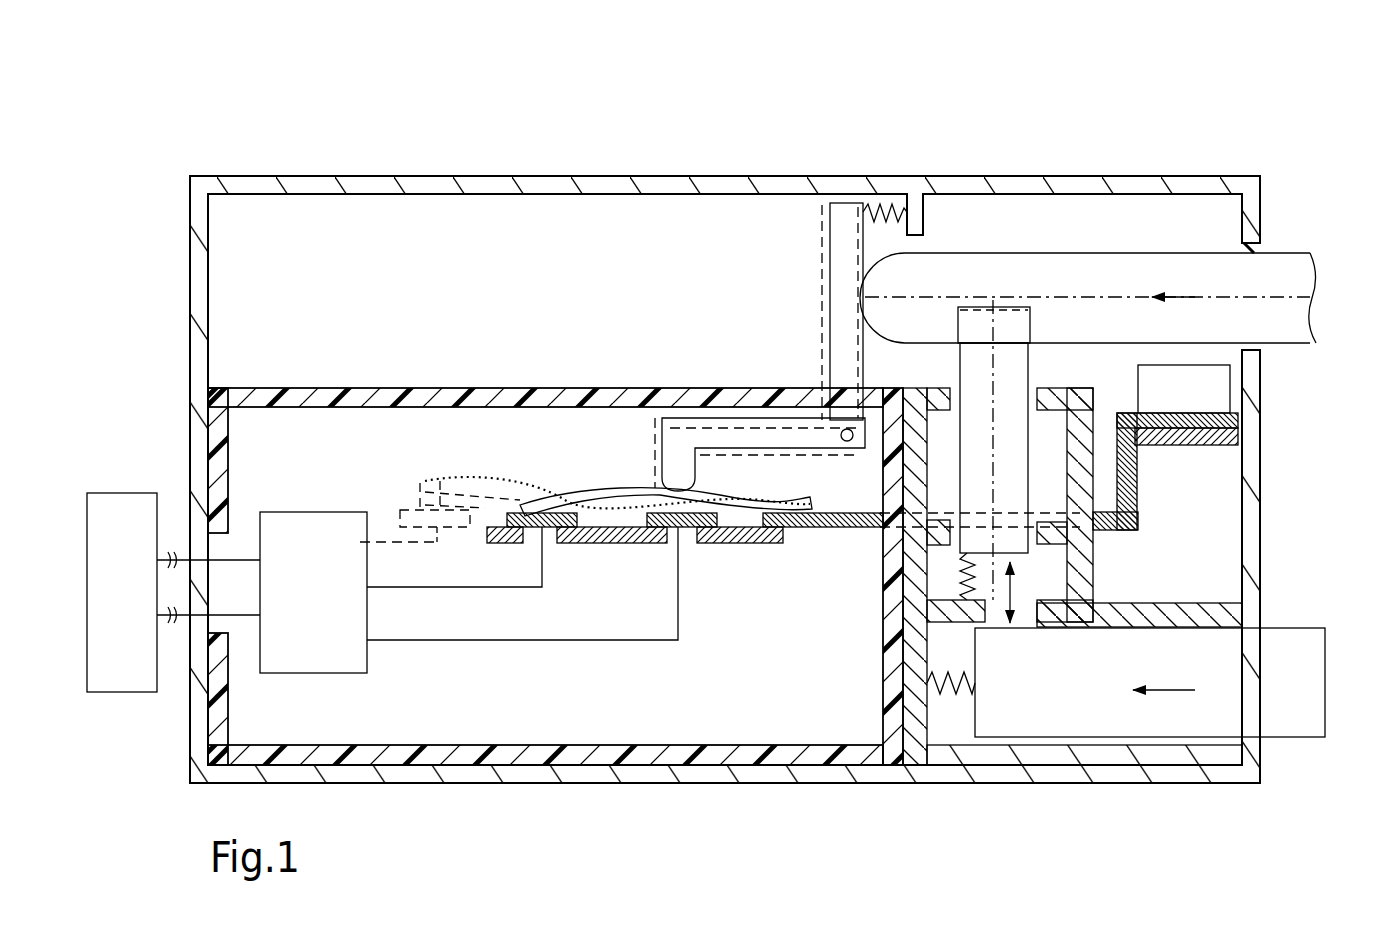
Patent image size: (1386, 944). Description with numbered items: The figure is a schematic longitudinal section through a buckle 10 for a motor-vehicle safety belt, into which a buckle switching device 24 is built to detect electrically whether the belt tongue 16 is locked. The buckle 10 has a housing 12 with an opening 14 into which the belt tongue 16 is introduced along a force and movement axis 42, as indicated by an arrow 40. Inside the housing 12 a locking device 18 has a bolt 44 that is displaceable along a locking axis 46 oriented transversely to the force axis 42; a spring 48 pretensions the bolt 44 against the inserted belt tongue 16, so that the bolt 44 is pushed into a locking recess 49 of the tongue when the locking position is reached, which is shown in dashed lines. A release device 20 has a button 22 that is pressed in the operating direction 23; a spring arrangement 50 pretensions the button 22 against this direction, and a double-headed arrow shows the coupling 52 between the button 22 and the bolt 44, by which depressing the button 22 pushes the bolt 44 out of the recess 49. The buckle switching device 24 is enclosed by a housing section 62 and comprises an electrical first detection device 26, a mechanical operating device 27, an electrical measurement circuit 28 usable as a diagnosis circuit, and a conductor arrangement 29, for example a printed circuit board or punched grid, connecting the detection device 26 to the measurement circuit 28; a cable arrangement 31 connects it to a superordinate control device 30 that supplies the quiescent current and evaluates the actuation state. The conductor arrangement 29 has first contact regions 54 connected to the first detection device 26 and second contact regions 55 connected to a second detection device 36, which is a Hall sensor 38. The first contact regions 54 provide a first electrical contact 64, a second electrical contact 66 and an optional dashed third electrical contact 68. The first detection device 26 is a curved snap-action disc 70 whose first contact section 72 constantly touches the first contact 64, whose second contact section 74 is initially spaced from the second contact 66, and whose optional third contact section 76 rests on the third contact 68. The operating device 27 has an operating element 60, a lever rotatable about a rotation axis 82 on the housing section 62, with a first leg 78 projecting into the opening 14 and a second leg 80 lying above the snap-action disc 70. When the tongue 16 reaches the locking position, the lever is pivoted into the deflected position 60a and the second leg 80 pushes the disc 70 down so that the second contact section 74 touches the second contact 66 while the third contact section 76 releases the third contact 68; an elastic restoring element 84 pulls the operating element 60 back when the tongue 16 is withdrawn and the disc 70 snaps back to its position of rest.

The buckle 10 is at (1217, 153).
The housing 12 is at (764, 192).
The opening 14 is at (1272, 255).
The belt tongue 16 is at (1292, 313).
The locking device 18 is at (1068, 377).
The release device 20 is at (1133, 598).
The button 22 is at (1290, 695).
The operating direction 23 is at (1162, 700).
The buckle switching device 24 is at (348, 447).
The first detection device 26 is at (717, 350).
The mechanical operating device 27 is at (813, 345).
The electrical measurement circuit 28 is at (378, 668).
The conductor arrangement 29 is at (603, 660).
The control device 30 is at (125, 507).
The cable arrangement 31 is at (177, 533).
The second detection device 36 is at (1263, 407).
The Hall sensor 38 is at (1198, 393).
The arrow 40 is at (1182, 290).
The force and movement axis 42 is at (975, 320).
The bolt 44 is at (1005, 380).
The locking axis 46 is at (995, 470).
The spring 48 is at (967, 580).
The locking recess 49 is at (1047, 325).
The spring arrangement 50 is at (950, 697).
The coupling 52 is at (1013, 590).
The first contact regions 54 is at (593, 567).
The second contact regions 55 is at (1182, 450).
The operating element 60 is at (845, 215).
The deflected position of operating element 60a is at (822, 232).
The housing section 62 is at (487, 400).
The first electrical contact 64 is at (545, 527).
The second electrical contact 66 is at (683, 527).
The third electrical contact 68 is at (448, 527).
The snap-action disc 70 is at (622, 495).
The first contact section 72 is at (572, 500).
The second contact section 74 is at (647, 480).
The third contact section 76 is at (450, 505).
The first leg 78 is at (820, 325).
The second leg 80 is at (763, 450).
The rotation axis 82 is at (845, 445).
The elastic restoring element 84 is at (884, 205).